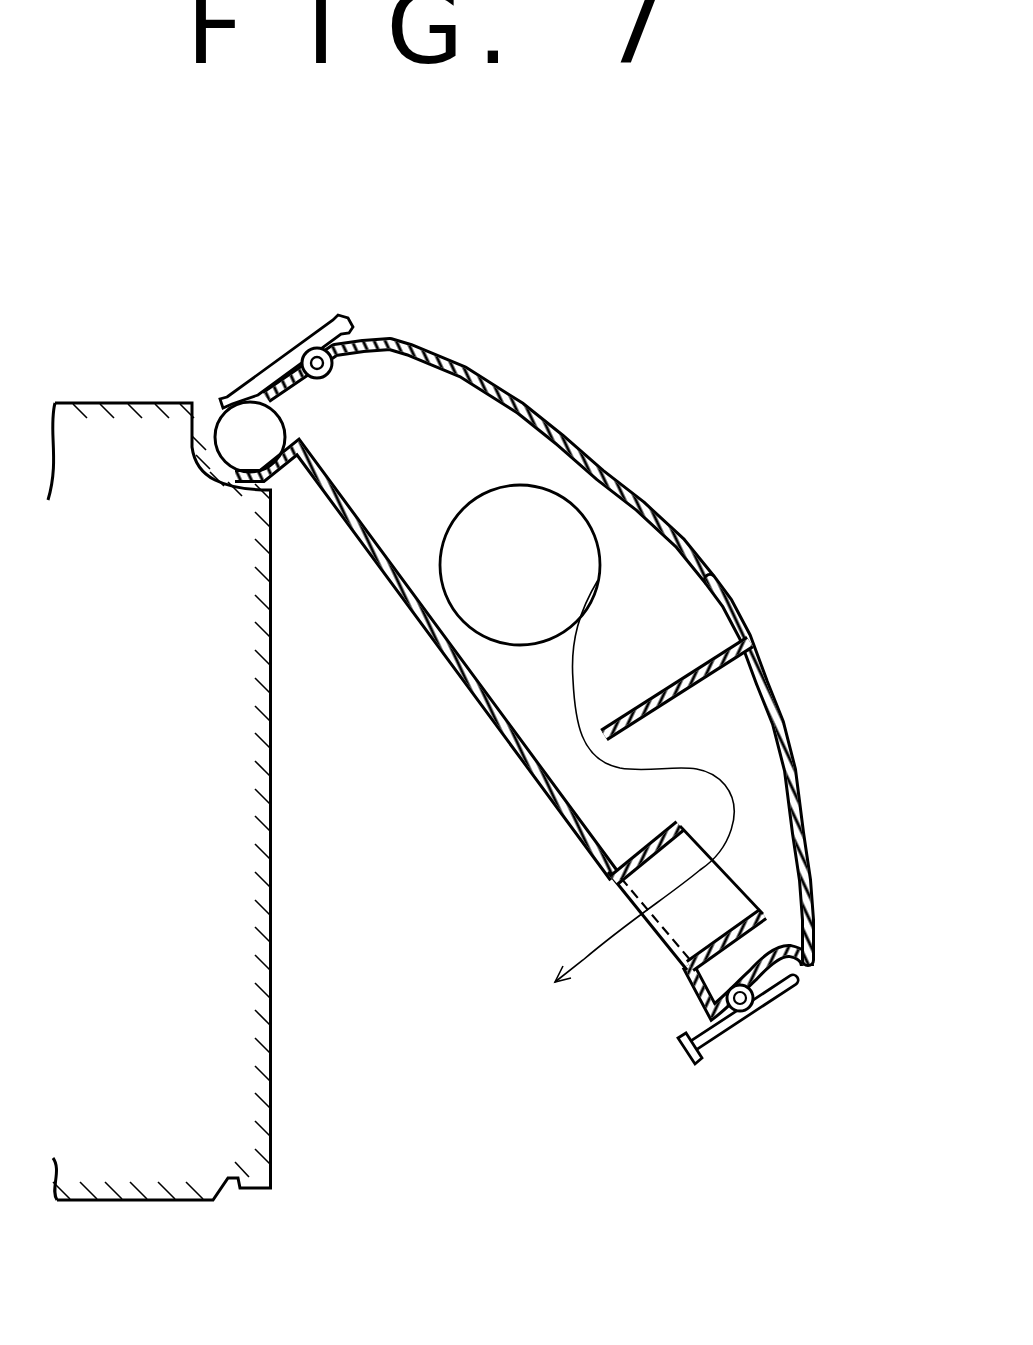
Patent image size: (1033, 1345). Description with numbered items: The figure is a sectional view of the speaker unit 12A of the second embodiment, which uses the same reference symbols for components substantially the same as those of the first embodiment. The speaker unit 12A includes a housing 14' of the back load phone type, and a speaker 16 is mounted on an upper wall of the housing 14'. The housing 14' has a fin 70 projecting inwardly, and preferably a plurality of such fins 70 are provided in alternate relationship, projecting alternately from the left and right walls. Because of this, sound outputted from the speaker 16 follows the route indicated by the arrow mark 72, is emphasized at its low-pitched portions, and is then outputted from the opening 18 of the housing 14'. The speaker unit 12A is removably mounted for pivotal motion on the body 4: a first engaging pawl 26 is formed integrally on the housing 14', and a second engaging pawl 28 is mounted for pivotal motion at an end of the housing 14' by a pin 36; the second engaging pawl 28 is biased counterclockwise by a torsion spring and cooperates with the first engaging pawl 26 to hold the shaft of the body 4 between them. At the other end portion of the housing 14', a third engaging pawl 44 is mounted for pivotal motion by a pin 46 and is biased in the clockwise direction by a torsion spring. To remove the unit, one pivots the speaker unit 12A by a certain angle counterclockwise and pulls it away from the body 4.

The body 4 is at (122, 1163).
The speaker unit 12A is at (692, 505).
The housing 14' is at (807, 770).
The speaker 16 is at (532, 517).
The opening 18 is at (667, 930).
The first engaging pawl 26 is at (252, 490).
The second engaging pawl 28 is at (341, 312).
The pin 36 is at (307, 347).
The third engaging pawl 44 is at (693, 1055).
The pin 46 is at (753, 1008).
The fin 70 is at (660, 683).
The arrow mark 72 is at (610, 940).